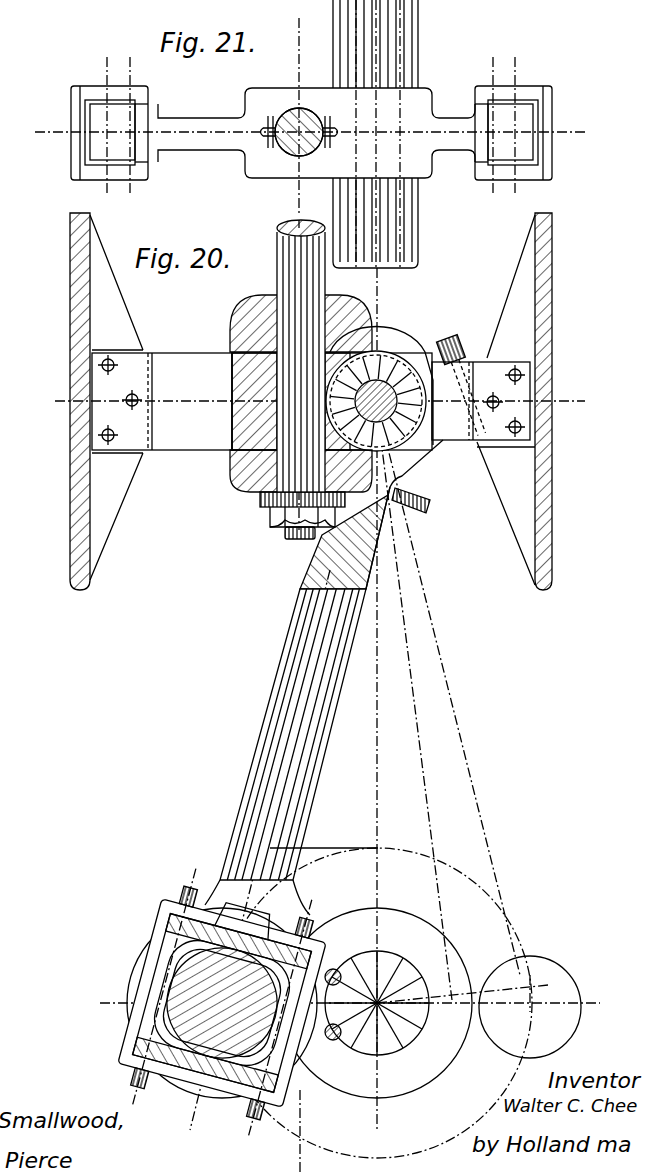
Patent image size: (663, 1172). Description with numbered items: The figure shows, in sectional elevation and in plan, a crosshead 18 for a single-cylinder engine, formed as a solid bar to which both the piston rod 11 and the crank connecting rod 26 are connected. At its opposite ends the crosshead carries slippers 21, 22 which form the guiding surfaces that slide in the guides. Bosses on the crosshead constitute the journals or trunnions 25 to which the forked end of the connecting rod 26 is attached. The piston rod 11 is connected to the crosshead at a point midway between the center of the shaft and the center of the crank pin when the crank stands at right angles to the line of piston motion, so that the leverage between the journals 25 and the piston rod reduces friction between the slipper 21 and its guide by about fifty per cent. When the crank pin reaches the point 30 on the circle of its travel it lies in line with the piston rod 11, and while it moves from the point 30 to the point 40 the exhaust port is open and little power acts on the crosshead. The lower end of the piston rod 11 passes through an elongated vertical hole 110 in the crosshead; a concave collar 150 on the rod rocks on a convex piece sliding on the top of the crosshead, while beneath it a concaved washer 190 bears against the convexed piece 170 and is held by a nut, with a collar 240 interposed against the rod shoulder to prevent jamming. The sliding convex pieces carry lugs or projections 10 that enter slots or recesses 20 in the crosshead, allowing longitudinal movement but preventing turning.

In FIG. 20, the lug or projection 10 is at (372, 316).
In FIG. 21, the piston rod 11 is at (287, 150).
In FIG. 20, the piston rod 11 is at (277, 238).
In FIG. 21, the crosshead 18 is at (192, 140).
In FIG. 20, the crosshead 18 is at (162, 401).
In FIG. 21, the slot or recess 20 is at (301, 132).
In FIG. 21, the slipper 21 is at (72, 155).
In FIG. 20, the slipper 21 is at (72, 563).
In FIG. 21, the slipper 22 is at (553, 155).
In FIG. 20, the slipper 22 is at (553, 548).
In FIG. 21, the journals or trunnions 25 is at (418, 55).
In FIG. 20, the journals or trunnions 25 is at (402, 440).
In FIG. 20, the connecting rod 26 is at (300, 713).
In FIG. 20, the point 30 is at (300, 868).
In FIG. 20, the point 40 is at (379, 849).
In FIG. 20, the elongated vertical hole 110 is at (262, 380).
In FIG. 20, the concave collar 150 is at (240, 302).
In FIG. 20, the convexed piece 170 is at (245, 466).
In FIG. 20, the concaved washer 190 is at (243, 494).
In FIG. 20, the collar 240 is at (280, 512).